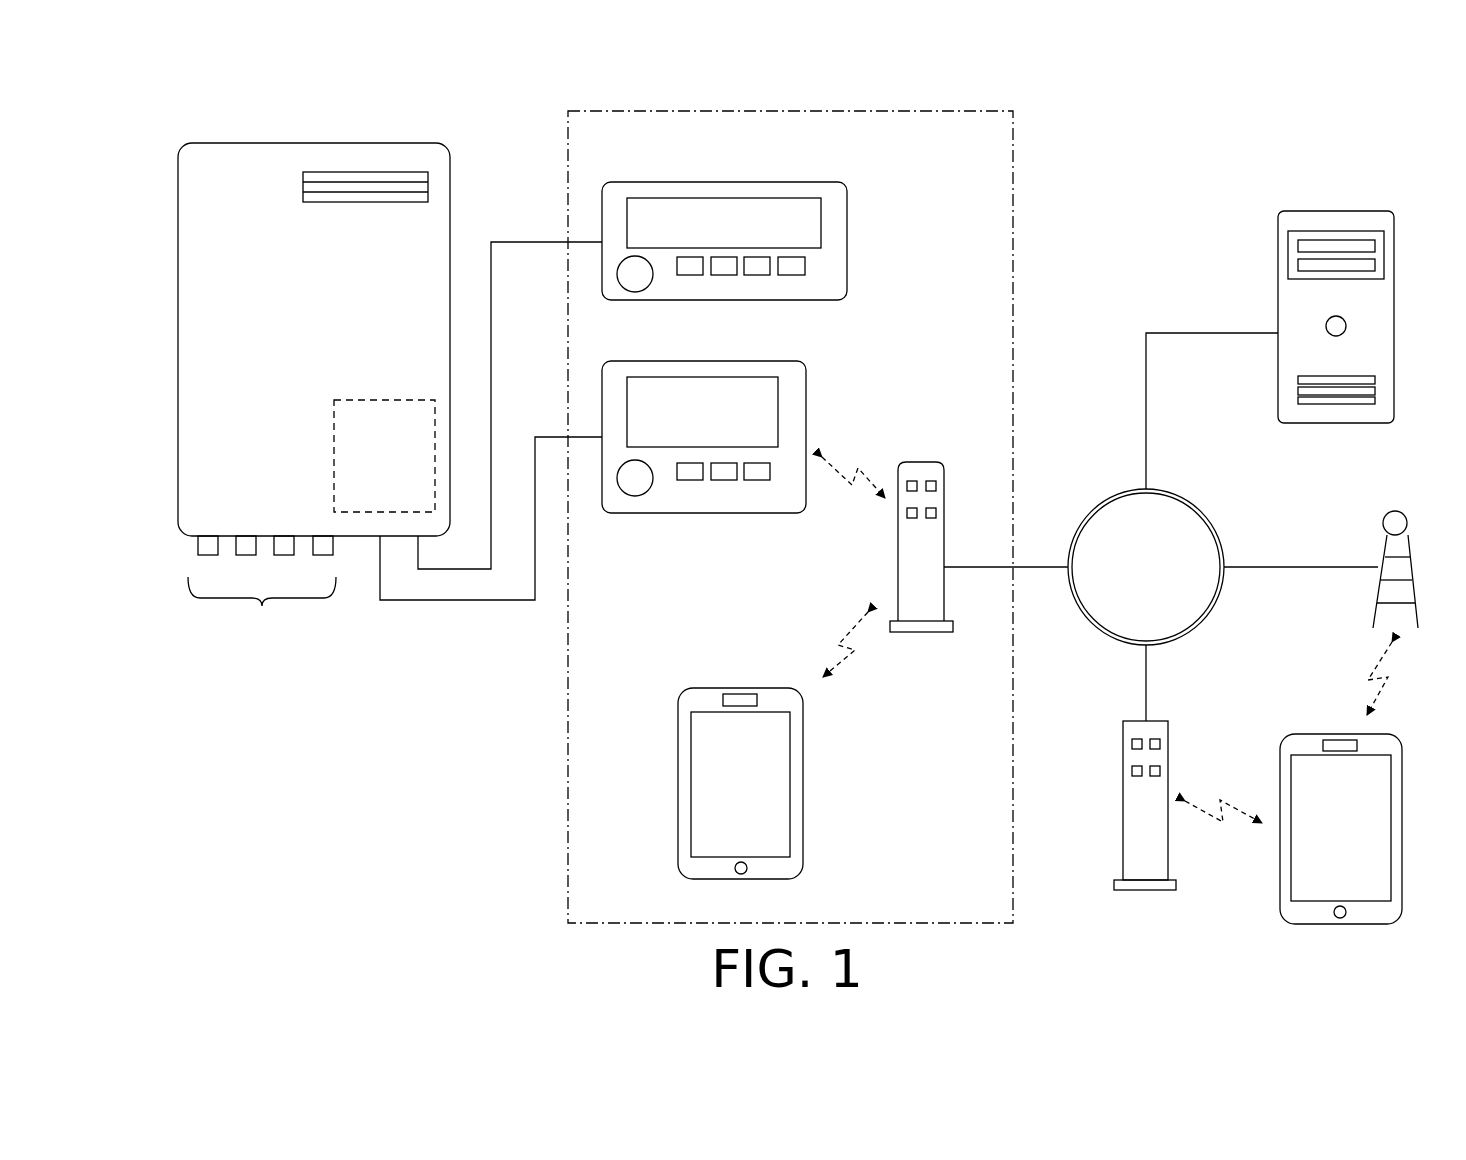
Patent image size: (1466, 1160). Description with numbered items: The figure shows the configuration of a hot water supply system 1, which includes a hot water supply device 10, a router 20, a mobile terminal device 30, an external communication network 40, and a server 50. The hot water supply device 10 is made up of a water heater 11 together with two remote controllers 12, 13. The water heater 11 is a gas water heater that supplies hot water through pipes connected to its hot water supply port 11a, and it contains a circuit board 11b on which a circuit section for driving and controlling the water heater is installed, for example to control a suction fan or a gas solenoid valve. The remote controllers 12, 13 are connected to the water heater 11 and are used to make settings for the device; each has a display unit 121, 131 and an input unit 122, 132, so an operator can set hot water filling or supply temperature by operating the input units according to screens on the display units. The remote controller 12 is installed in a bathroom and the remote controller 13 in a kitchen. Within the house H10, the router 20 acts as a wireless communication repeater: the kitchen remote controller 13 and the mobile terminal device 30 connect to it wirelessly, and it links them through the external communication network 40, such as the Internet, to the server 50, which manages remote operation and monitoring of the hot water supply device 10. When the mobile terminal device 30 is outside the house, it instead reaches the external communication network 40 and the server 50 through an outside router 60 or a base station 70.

The hot water supply system 1 is at (1302, 143).
The hot water supply device 10 is at (178, 122).
The water heater 11 is at (380, 143).
The hot water supply port 11a is at (262, 587).
The circuit board 11b is at (380, 398).
The house H10 is at (1013, 143).
The remote controller 12 is at (823, 182).
The display unit 121 is at (737, 203).
The input unit 122 is at (818, 264).
The remote controller 13 is at (806, 372).
The display unit 131 is at (712, 388).
The input unit 132 is at (718, 490).
The router 20 is at (944, 487).
The mobile terminal device 30 is at (803, 750).
The external communication network 40 is at (1195, 498).
The server 50 is at (1380, 211).
The router 60 is at (1168, 740).
The base station 70 is at (1400, 510).